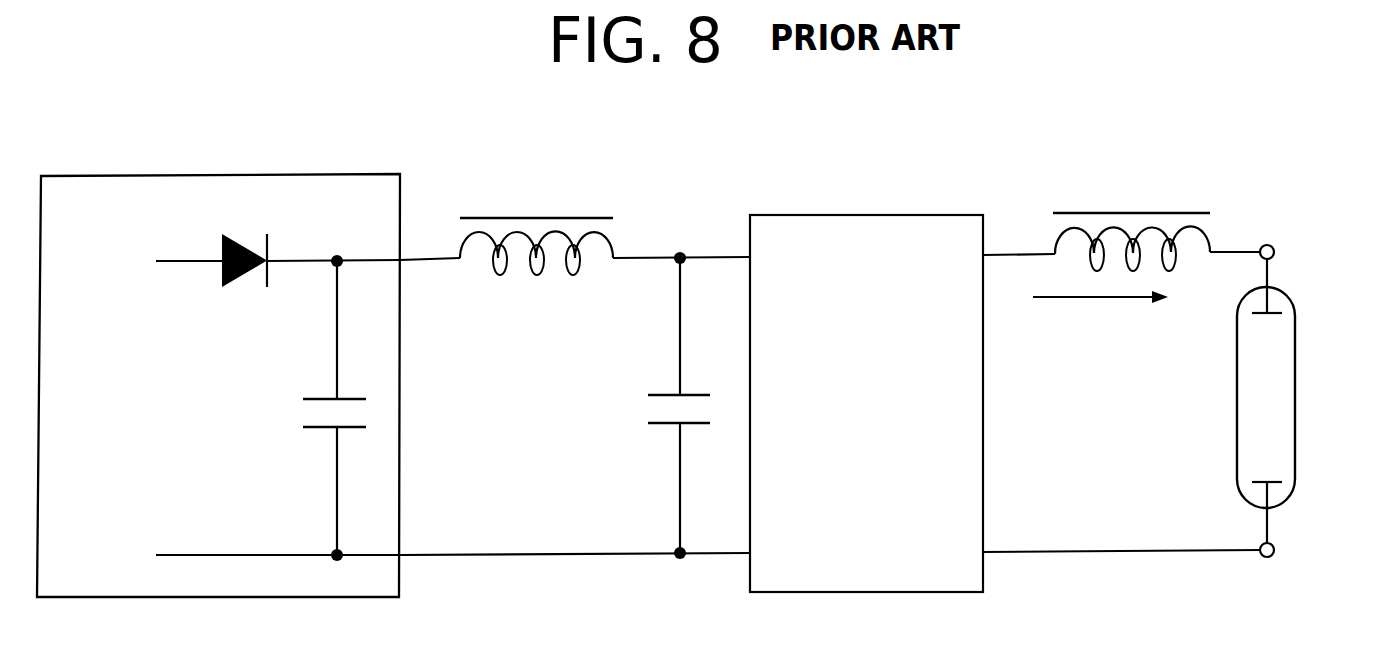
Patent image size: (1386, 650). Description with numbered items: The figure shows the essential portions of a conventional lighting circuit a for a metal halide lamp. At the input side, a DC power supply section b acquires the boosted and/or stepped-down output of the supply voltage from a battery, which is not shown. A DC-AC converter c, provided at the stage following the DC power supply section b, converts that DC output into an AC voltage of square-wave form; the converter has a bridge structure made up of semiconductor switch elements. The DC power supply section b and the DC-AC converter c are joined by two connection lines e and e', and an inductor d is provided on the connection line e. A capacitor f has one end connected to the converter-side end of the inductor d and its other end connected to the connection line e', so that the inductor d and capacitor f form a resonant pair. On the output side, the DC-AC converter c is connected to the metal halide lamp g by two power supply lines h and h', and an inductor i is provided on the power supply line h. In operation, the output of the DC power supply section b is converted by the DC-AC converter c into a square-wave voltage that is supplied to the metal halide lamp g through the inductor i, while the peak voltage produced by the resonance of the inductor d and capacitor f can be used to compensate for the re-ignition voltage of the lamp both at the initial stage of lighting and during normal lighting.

The circuit a is at (975, 155).
The DC power supply section b is at (247, 174).
The DC-AC converter c is at (850, 215).
The inductor d is at (613, 247).
The connection line e is at (430, 185).
The connection line e' is at (575, 506).
The capacitor f is at (658, 393).
The metal halide lamp g is at (1296, 362).
The power supply line h is at (1019, 201).
The power supply line h' is at (1121, 500).
The inductor i is at (1207, 238).